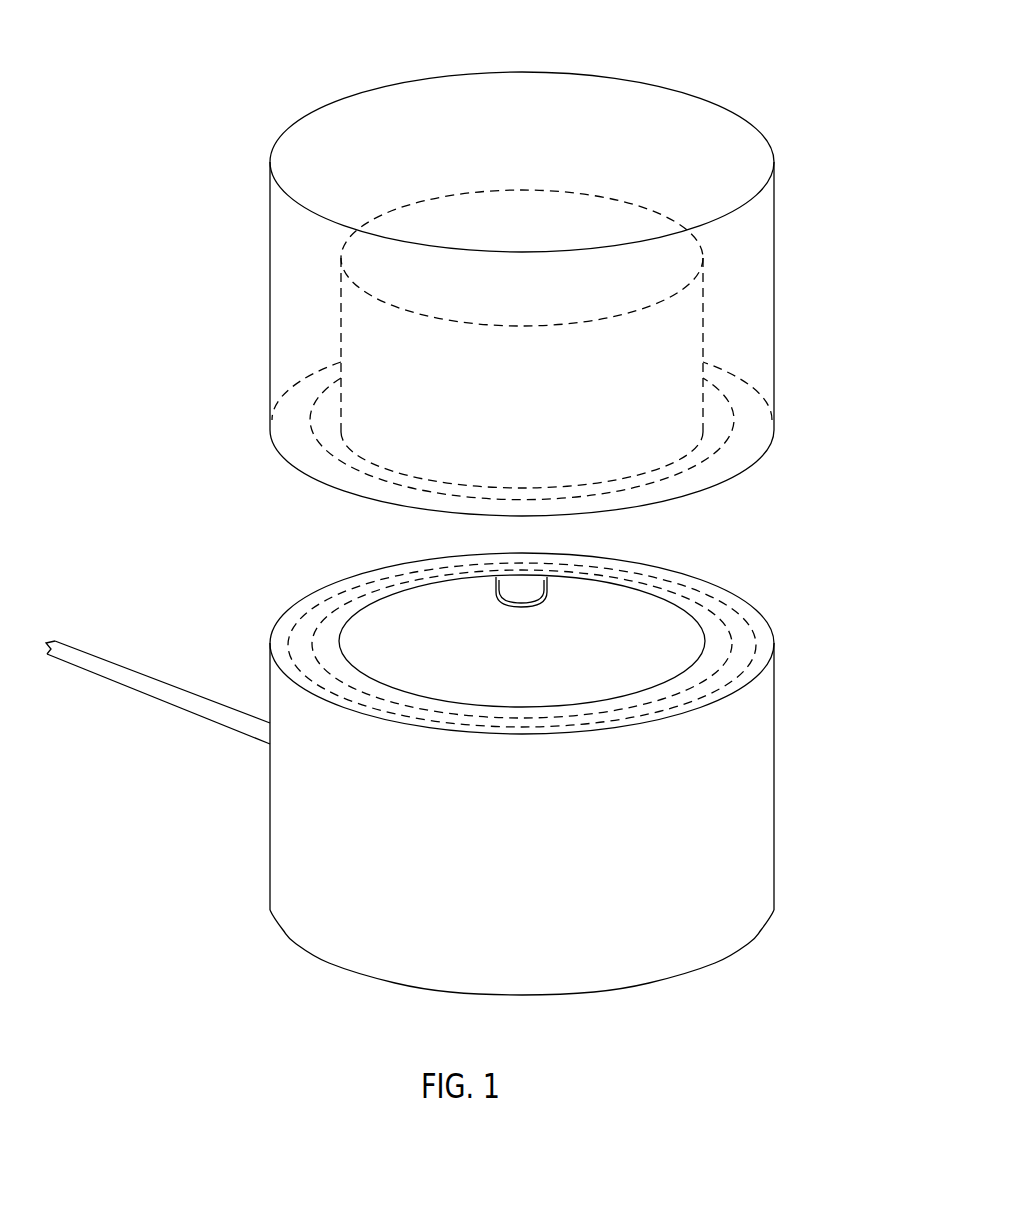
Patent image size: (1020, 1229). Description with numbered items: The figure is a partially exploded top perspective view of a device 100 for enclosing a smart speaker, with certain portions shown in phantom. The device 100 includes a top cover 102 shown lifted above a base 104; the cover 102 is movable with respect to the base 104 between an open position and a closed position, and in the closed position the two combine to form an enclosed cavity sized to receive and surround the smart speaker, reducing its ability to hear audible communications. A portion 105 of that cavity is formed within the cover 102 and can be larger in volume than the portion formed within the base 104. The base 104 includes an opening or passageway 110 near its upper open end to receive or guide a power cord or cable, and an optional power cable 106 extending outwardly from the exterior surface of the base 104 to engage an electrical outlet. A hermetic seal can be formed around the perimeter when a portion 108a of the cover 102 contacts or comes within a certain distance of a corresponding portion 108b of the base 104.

The device 100 is at (800, 119).
The top cover 102 is at (776, 252).
The base 104 is at (776, 723).
The portion of the cavity 105 is at (585, 228).
The power cable 106 is at (130, 680).
The portion of the cover 108a is at (336, 337).
The portion of the base 108b is at (297, 631).
The opening or passageway 110 is at (537, 582).